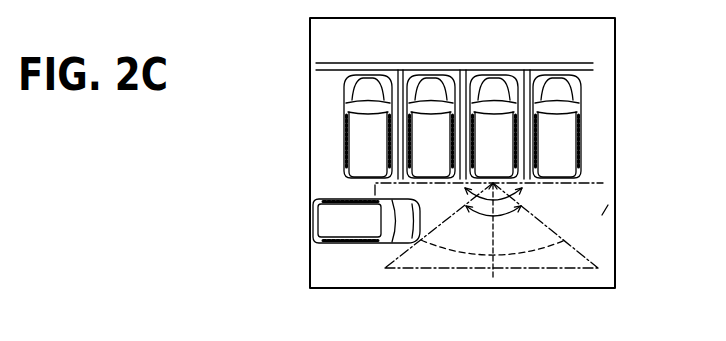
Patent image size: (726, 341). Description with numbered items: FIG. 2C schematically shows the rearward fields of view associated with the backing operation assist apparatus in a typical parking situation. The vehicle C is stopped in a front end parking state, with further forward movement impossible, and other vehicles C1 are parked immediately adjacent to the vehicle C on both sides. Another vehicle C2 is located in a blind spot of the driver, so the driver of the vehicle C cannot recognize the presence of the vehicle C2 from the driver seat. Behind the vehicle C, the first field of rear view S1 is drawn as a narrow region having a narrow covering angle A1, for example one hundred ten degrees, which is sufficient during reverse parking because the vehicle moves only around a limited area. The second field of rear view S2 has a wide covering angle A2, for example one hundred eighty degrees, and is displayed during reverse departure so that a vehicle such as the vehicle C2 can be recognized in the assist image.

The vehicle C is at (492, 88).
The other vehicles C1 is at (430, 88).
The another vehicle C2 is at (344, 228).
The first field of rear view S1 is at (570, 267).
The second field of rear view S2 is at (593, 209).
The narrow covering angle A1 is at (520, 209).
The wide covering angle A2 is at (522, 190).